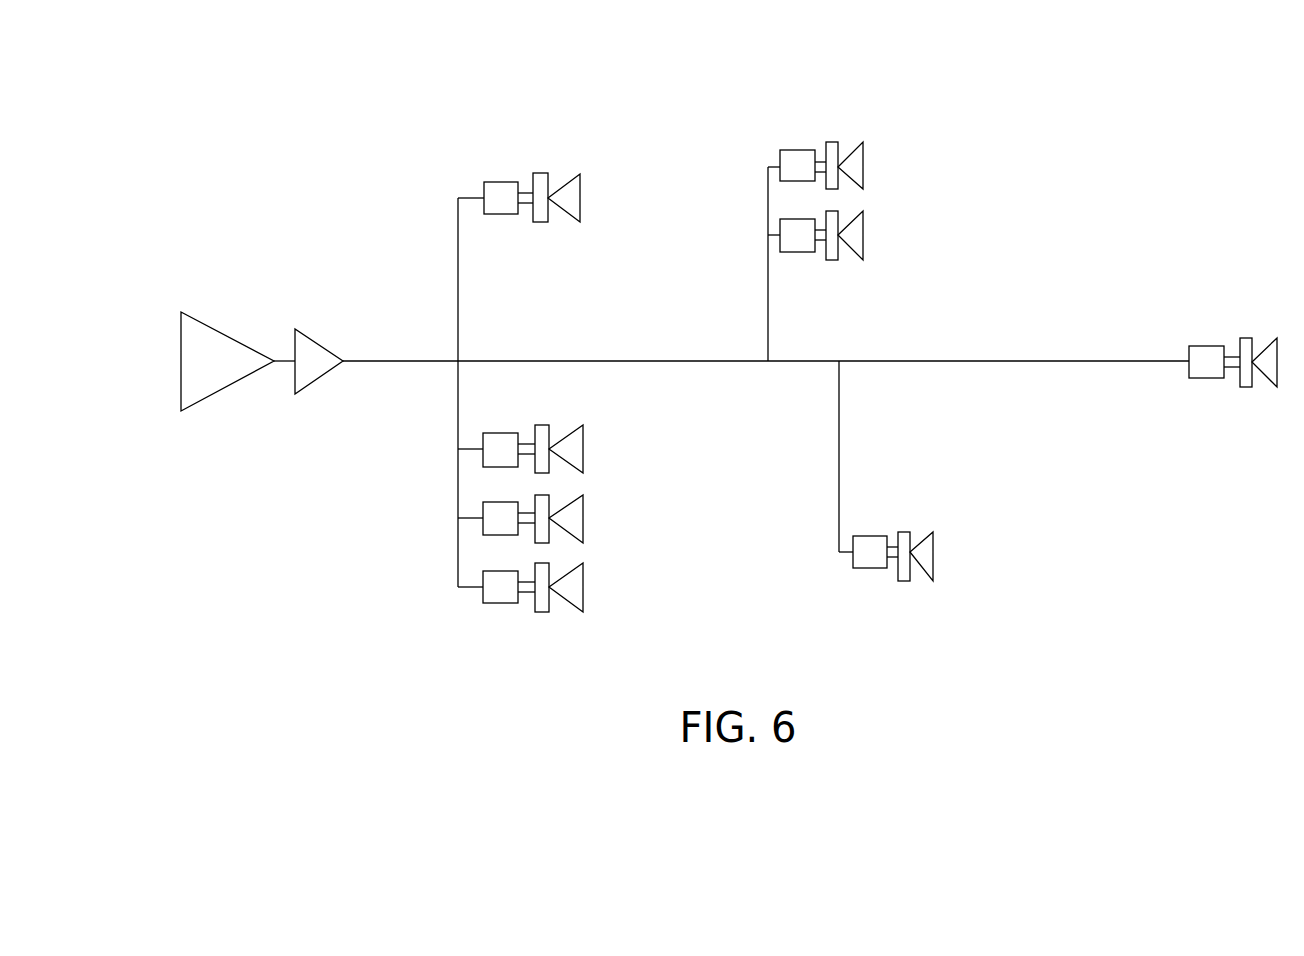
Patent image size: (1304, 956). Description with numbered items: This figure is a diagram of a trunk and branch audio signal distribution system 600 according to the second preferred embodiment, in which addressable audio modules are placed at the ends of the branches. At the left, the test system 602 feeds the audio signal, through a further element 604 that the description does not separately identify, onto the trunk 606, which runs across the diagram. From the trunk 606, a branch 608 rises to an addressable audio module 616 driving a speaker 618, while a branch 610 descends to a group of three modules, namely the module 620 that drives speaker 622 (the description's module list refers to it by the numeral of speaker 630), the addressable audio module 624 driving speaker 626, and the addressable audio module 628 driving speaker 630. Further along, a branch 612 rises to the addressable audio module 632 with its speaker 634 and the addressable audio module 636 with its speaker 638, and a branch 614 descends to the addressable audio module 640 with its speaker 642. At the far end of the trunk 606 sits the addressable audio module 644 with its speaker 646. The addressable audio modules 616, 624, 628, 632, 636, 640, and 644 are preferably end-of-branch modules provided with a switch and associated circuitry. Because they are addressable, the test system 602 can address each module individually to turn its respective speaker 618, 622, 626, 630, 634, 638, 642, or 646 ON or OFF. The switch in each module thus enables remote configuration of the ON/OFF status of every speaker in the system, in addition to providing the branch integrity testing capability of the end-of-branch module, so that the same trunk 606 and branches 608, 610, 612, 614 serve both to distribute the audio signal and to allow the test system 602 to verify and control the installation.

The audio signal distribution system 600 is at (468, 78).
The test system 602 is at (219, 337).
The second amplifier 604 is at (324, 358).
The trunk 606 is at (428, 361).
The branch 608 is at (458, 268).
The branch 610 is at (458, 413).
The branch 612 is at (768, 302).
The branch 614 is at (839, 470).
The addressable audio module 616 is at (500, 182).
The speaker 618 is at (553, 170).
The driver circuit 620 is at (493, 433).
The speaker 622 is at (563, 435).
The addressable audio module 624 is at (505, 512).
The speaker 626 is at (565, 515).
The addressable audio module 628 is at (497, 598).
The speaker 630 is at (568, 590).
The addressable audio module 632 is at (791, 155).
The speaker 634 is at (850, 163).
The addressable audio module 636 is at (793, 252).
The speaker 638 is at (853, 245).
The addressable audio module 640 is at (878, 565).
The speaker 642 is at (918, 563).
The addressable audio module 644 is at (1208, 352).
The speaker 646 is at (1272, 378).